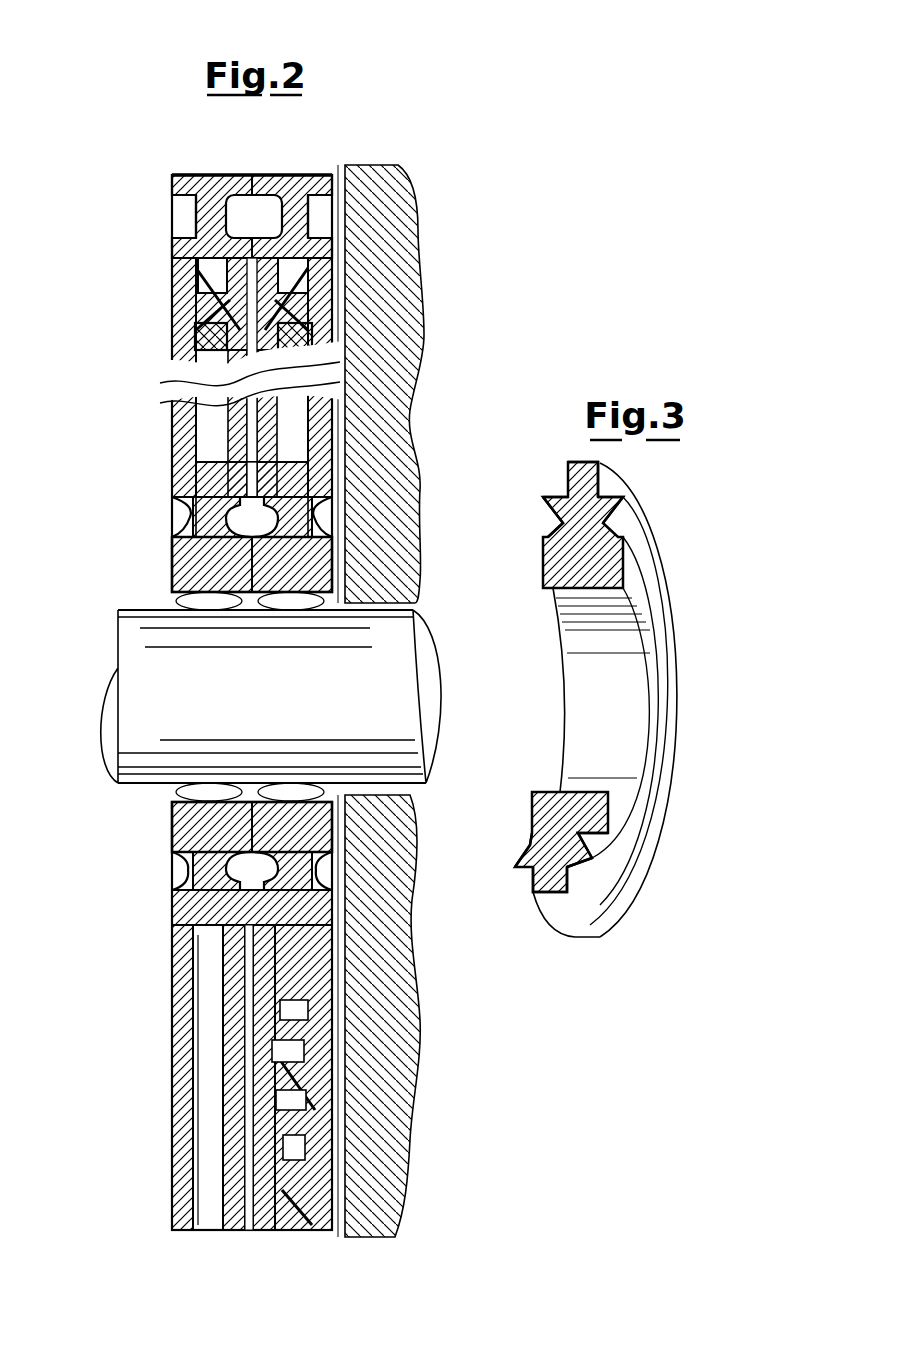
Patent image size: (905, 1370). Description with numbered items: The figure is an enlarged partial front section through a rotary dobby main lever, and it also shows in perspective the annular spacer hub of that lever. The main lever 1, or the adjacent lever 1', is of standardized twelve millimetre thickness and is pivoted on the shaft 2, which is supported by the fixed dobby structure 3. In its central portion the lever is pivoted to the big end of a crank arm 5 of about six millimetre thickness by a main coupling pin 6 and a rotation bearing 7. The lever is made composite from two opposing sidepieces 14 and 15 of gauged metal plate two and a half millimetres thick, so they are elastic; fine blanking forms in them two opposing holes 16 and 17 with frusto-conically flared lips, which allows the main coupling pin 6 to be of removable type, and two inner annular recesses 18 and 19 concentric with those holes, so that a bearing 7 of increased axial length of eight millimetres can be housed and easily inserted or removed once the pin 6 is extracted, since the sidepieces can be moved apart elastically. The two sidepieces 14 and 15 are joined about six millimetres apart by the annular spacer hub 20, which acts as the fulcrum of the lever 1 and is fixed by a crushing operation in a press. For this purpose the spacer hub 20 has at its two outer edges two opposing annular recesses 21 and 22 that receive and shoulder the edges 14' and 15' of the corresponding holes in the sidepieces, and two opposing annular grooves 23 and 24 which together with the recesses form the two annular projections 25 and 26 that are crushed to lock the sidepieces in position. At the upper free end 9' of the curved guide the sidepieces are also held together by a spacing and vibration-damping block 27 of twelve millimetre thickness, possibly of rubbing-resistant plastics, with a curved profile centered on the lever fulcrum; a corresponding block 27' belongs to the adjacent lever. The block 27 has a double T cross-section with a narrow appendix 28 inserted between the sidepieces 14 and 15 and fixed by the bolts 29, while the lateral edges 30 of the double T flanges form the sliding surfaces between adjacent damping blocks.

In FIG. 2, the main lever 1 is at (252, 346).
In FIG. 2, the main lever 1' is at (233, 1049).
In FIG. 2, the shaft 2 is at (130, 660).
In FIG. 2, the fixed dobby structure 3 is at (390, 400).
In FIG. 2, the crank arm 5 is at (298, 1047).
In FIG. 2, the main coupling pin 6 is at (330, 1112).
In FIG. 2, the rotation bearing 7 is at (300, 1082).
In FIG. 2, the upper free end of the curved guide 9' is at (280, 363).
In FIG. 2, the sidepiece 14 is at (261, 687).
In FIG. 2, the hole edge 14' is at (255, 709).
In FIG. 2, the sidepiece 15 is at (280, 769).
In FIG. 2, the hole edge 15' is at (261, 750).
In FIG. 2, the hole 16 is at (190, 1092).
In FIG. 2, the hole 17 is at (310, 1162).
In FIG. 2, the inner annular recess 18 is at (225, 1017).
In FIG. 2, the inner annular recess 19 is at (315, 1012).
In FIG. 2, the annular spacer hub 20 is at (178, 596).
In FIG. 3, the annular spacer hub 20 is at (705, 625).
In FIG. 3, the annular recess 21 is at (560, 478).
In FIG. 3, the annular recess 22 is at (612, 478).
In FIG. 2, the annular groove 23 is at (180, 532).
In FIG. 3, the annular groove 23 is at (552, 522).
In FIG. 2, the annular groove 24 is at (300, 552).
In FIG. 3, the annular groove 24 is at (612, 523).
In FIG. 2, the annular projection 25 is at (188, 512).
In FIG. 3, the annular projection 25 is at (545, 498).
In FIG. 2, the annular projection 26 is at (195, 562).
In FIG. 3, the annular projection 26 is at (622, 500).
In FIG. 2, the spacing and vibration-damping block 27 is at (265, 188).
In FIG. 2, the spacing and vibration-damping block 27' is at (133, 163).
In FIG. 2, the narrow appendix 28 is at (185, 362).
In FIG. 2, the bolts 29 is at (182, 312).
In FIG. 2, the lateral edges of the flanges 30 is at (252, 175).